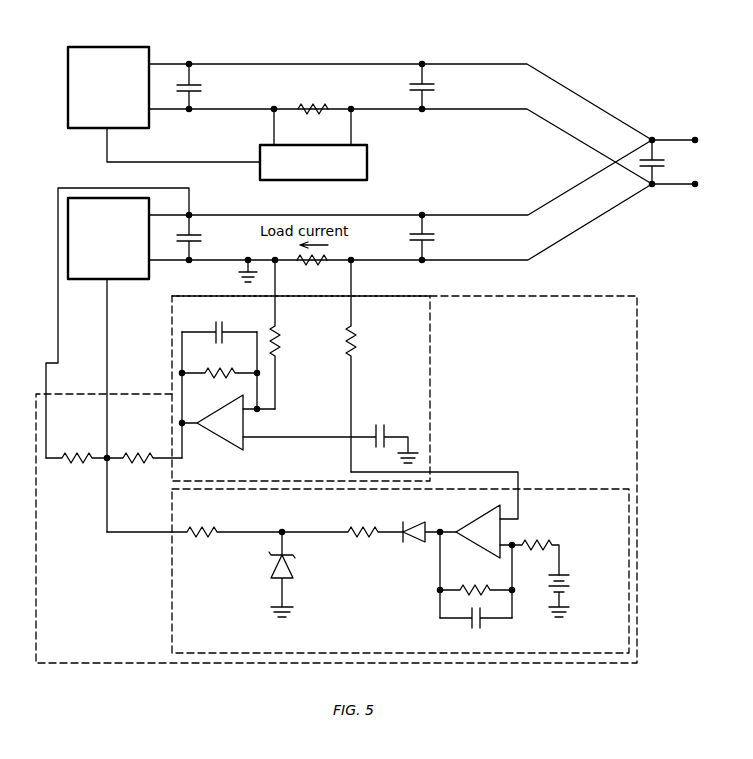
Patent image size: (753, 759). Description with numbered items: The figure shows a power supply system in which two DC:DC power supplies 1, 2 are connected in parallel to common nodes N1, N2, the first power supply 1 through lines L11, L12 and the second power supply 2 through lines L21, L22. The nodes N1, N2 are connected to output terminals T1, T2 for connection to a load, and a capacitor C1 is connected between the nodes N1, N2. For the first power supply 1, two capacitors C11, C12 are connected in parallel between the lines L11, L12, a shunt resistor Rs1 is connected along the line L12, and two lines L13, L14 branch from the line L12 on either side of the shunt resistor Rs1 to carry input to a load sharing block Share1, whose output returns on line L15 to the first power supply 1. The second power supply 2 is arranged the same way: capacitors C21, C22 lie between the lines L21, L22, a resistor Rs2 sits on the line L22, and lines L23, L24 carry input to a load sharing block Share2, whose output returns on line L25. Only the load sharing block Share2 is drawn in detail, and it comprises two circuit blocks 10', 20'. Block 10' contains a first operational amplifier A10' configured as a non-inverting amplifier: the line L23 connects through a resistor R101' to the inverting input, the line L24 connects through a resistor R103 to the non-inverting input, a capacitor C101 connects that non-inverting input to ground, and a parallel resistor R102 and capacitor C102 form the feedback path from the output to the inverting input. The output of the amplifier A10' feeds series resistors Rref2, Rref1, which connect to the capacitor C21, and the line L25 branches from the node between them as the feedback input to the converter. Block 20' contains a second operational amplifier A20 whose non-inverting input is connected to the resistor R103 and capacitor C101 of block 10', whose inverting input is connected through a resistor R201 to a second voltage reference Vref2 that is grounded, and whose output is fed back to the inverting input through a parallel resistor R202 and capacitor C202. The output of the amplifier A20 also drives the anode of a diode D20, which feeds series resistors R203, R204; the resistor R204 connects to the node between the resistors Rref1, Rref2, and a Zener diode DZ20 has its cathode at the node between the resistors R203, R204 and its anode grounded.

The first power supply 1 is at (68, 61).
The second power supply 2 is at (68, 213).
The first circuit block 10' is at (327, 388).
The second circuit block 20' is at (400, 548).
The load sharing block Share1 is at (313, 162).
The load sharing block Share2 is at (637, 310).
The line L11 is at (503, 63).
The line L12 is at (503, 112).
The line L13 is at (274, 129).
The line L14 is at (351, 128).
The line L15 is at (107, 151).
The line L21 is at (550, 201).
The line L22 is at (571, 234).
The line L23 is at (275, 311).
The line L24 is at (351, 311).
The line L25 is at (107, 311).
The capacitor C11 is at (205, 86).
The capacitor C12 is at (439, 86).
The capacitor C21 is at (205, 237).
The capacitor C22 is at (439, 237).
The capacitor C1 is at (663, 162).
The shunt resistor Rs1 is at (312, 98).
The resistor Rs2 is at (312, 271).
The node N1 is at (656, 130).
The node N2 is at (656, 193).
The output terminal T1 is at (685, 141).
The output terminal T2 is at (685, 185).
The capacitor C102 is at (219, 322).
The resistor R102 is at (219, 363).
The resistor R101' is at (298, 334).
The resistor R103 is at (373, 366).
The first operational amplifier A10' is at (211, 413).
The capacitor C101 is at (330, 434).
The resistor Rref1 is at (76, 448).
The resistor Rref2 is at (143, 448).
The resistor R204 is at (194, 521).
The resistor R203 is at (341, 521).
The diode D20 is at (427, 522).
The Zener diode DZ20 is at (304, 574).
The second operational amplifier A20 is at (476, 527).
The resistor R201 is at (529, 548).
The resistor R202 is at (475, 575).
The capacitor C202 is at (476, 629).
The second voltage reference Vref2 is at (581, 596).